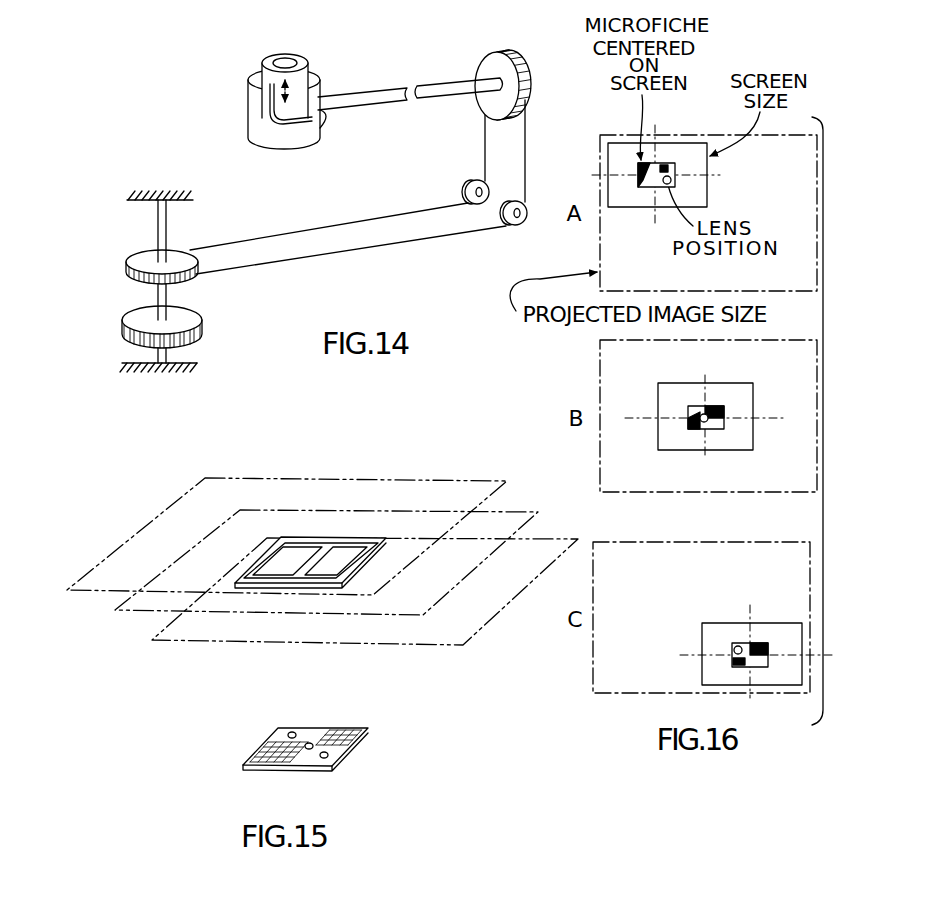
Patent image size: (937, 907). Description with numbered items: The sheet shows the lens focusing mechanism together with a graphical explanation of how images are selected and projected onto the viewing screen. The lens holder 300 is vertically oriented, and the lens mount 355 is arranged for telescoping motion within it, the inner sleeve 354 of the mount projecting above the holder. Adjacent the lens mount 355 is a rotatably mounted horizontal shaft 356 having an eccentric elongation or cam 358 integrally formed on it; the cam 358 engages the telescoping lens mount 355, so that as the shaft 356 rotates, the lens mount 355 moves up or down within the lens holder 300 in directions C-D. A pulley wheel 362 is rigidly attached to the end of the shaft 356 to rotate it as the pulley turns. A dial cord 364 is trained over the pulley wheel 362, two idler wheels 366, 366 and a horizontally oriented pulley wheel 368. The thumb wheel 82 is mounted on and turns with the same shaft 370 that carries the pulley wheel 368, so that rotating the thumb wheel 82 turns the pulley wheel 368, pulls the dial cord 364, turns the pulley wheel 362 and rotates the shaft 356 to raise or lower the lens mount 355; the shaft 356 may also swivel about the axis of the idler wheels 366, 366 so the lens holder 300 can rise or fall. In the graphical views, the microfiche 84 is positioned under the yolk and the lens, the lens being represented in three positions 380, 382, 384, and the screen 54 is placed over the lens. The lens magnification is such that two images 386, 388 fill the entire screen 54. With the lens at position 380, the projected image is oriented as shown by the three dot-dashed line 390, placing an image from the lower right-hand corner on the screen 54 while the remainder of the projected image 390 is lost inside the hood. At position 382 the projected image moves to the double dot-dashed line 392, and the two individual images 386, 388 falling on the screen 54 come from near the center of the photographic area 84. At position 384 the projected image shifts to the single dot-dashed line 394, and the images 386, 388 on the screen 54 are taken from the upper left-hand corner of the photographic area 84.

In FIG. 14, the lens holder 300 is at (301, 102).
In FIG. 14, the inner sleeve 354 is at (291, 58).
In FIG. 14, the lens mount 355 is at (263, 70).
In FIG. 14, the cam 358 is at (318, 120).
In FIG. 14, the horizontal shaft 356 is at (448, 82).
In FIG. 14, the pulley wheel 362 is at (518, 56).
In FIG. 14, the dial cord 364 is at (527, 168).
In FIG. 14, the idler wheels 366 is at (467, 186).
In FIG. 14, the horizontally oriented pulley wheel 368 is at (140, 262).
In FIG. 14, the shaft 370 is at (170, 292).
In FIG. 14, the thumb wheel 82 is at (122, 331).
In FIG. 14, the direction C is at (263, 68).
In FIG. 14, the direction D is at (275, 103).
In FIG. 15, the screen 54 is at (348, 515).
In FIG. 16, the screen 54 is at (708, 165).
In FIG. 15, the microfiche 84 is at (289, 738).
In FIG. 16, the microfiche 84 is at (675, 178).
In FIG. 15, the image 386 is at (285, 555).
In FIG. 15, the image 388 is at (345, 555).
In FIG. 15, the projected image 390 is at (477, 632).
In FIG. 16, the projected image 390 is at (701, 135).
In FIG. 15, the projected image 392 is at (418, 618).
In FIG. 16, the projected image 392 is at (598, 372).
In FIG. 15, the projected image 394 is at (365, 596).
In FIG. 16, the projected image 394 is at (612, 694).
In FIG. 15, the lens position 384 is at (289, 731).
In FIG. 16, the lens position 384 is at (707, 281).
In FIG. 15, the lens position 382 is at (305, 749).
In FIG. 16, the lens position 382 is at (703, 421).
In FIG. 15, the lens position 380 is at (328, 757).
In FIG. 16, the lens position 380 is at (733, 660).